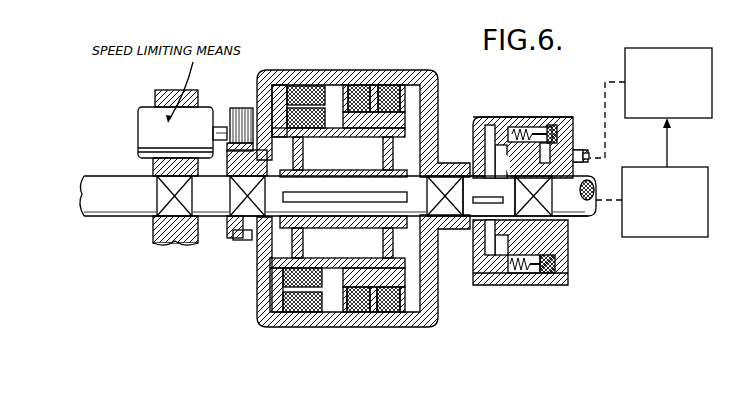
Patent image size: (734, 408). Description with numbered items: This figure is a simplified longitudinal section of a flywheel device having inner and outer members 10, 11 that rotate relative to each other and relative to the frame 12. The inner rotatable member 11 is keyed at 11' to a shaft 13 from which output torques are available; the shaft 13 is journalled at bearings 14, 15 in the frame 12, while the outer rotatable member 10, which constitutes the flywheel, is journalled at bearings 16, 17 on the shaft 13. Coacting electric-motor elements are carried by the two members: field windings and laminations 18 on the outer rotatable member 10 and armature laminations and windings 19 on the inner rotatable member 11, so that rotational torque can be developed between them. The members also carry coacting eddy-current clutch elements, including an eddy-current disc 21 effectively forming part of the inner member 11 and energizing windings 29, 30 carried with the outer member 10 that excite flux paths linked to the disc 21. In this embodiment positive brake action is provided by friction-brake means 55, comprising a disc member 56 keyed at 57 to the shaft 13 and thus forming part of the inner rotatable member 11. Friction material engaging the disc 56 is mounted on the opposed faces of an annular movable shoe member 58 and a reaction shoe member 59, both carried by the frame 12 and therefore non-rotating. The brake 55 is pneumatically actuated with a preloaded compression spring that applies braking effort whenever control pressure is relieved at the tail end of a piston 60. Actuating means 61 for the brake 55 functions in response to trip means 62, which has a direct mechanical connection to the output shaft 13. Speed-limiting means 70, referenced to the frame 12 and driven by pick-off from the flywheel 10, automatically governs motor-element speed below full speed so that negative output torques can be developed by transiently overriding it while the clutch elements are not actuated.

The outer rotatable member 10 is at (441, 72).
The inner rotatable member 11 is at (368, 186).
The key 11' is at (345, 190).
The frame 12 is at (152, 173).
The shaft 13 is at (596, 212).
The bearing 14 is at (172, 208).
The bearing 15 is at (549, 198).
The bearing 16 is at (245, 208).
The bearing 17 is at (449, 216).
The field windings and laminations 18 is at (301, 86).
The armature laminations and windings 19 is at (283, 112).
The eddy-current disc 21 is at (355, 125).
The energizing winding 29 is at (367, 84).
The energizing winding 30 is at (381, 84).
The friction-brake means 55 is at (529, 113).
The disc member 56 is at (481, 148).
The key 57 is at (503, 196).
The annular movable shoe member 58 is at (503, 137).
The reaction shoe member 59 is at (486, 145).
The piston 60 is at (574, 133).
The actuating means 61 is at (625, 52).
The trip means 62 is at (651, 238).
The speed-limiting means 70 is at (147, 117).